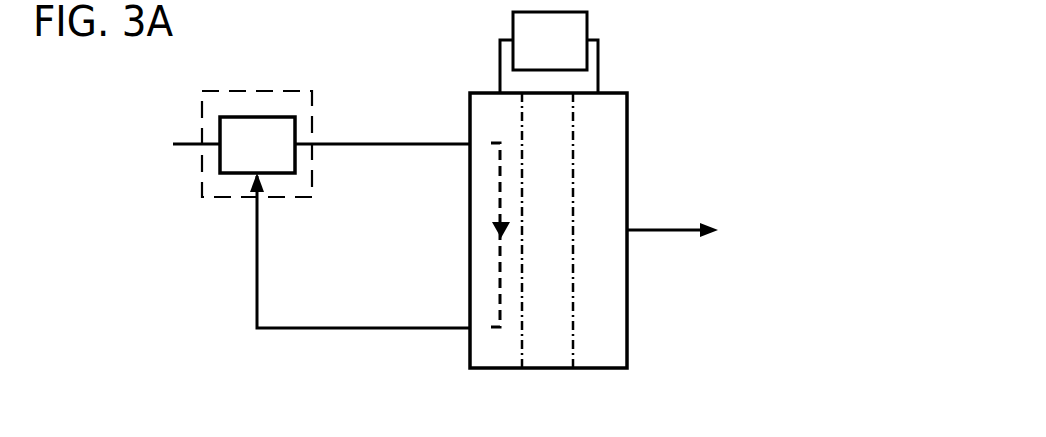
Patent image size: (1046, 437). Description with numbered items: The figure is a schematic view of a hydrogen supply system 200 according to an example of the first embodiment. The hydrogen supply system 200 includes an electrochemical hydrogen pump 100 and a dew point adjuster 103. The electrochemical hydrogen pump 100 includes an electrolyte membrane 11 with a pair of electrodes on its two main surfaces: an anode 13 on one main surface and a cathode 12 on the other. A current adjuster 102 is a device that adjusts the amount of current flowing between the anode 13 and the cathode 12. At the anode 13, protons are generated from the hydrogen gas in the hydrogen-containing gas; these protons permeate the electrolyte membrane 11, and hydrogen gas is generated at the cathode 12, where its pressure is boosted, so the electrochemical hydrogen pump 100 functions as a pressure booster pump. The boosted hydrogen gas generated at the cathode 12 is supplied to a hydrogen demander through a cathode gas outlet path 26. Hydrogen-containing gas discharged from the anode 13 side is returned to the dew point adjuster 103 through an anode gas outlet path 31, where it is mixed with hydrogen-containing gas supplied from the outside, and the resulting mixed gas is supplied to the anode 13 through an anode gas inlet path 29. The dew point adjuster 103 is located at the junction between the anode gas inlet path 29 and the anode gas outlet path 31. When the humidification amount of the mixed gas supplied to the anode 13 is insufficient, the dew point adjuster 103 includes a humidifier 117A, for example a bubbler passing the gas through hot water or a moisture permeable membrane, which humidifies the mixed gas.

The hydrogen supply system 200 is at (415, 33).
The electrochemical hydrogen pump 100 is at (578, 184).
The current adjuster 102 is at (580, 57).
The anode 13 is at (515, 128).
The electrolyte membrane 11 is at (564, 128).
The cathode 12 is at (616, 128).
The anode gas inlet path 29 is at (368, 142).
The anode gas outlet path 31 is at (378, 330).
The cathode gas outlet path 26 is at (663, 223).
The dew point adjuster 103 is at (228, 200).
The humidifier 117A is at (287, 161).